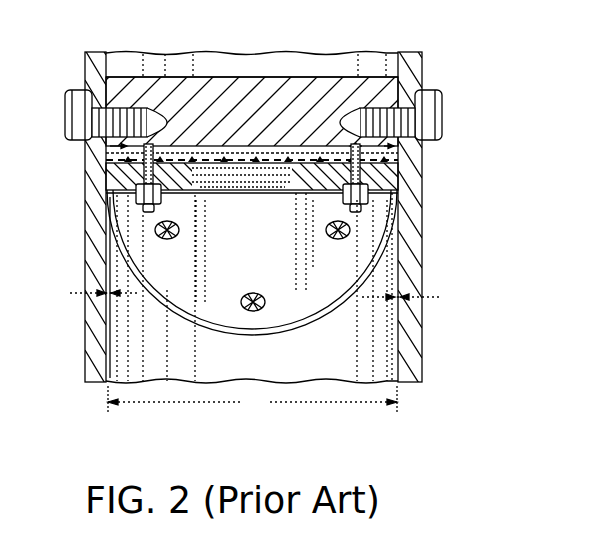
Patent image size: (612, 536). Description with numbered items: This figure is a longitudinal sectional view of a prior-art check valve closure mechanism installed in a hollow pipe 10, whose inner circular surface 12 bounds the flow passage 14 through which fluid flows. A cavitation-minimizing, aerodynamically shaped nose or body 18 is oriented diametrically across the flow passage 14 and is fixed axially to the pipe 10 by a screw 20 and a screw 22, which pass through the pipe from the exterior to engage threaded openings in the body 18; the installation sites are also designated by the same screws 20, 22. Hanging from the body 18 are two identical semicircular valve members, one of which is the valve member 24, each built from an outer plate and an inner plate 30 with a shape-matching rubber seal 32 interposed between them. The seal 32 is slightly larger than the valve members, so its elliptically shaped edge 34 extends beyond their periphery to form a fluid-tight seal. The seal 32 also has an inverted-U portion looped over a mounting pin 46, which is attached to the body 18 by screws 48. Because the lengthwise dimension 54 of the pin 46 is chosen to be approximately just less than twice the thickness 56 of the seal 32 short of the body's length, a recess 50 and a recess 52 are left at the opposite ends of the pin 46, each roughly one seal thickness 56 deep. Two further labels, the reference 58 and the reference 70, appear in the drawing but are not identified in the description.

The hollow pipe 10 is at (85, 64).
The inner circular surface 12 is at (110, 62).
The flow passage 14 is at (246, 62).
The body 18 is at (313, 72).
The screw 20 is at (428, 92).
The screw 22 is at (68, 120).
The semicircular valve member 24 is at (245, 278).
The inner plate 30 is at (158, 274).
The seal 32 is at (330, 305).
The edge of seal 34 is at (163, 303).
The mounting pin 46 is at (237, 192).
The screws 48 is at (163, 212).
The recess 50 is at (76, 294).
The recess 52 is at (432, 297).
The lengthwise dimension of pin 54 is at (200, 145).
The thickness of seal 56 is at (272, 186).
The width 58 is at (252, 399).
The fasteners 70 is at (83, 182).